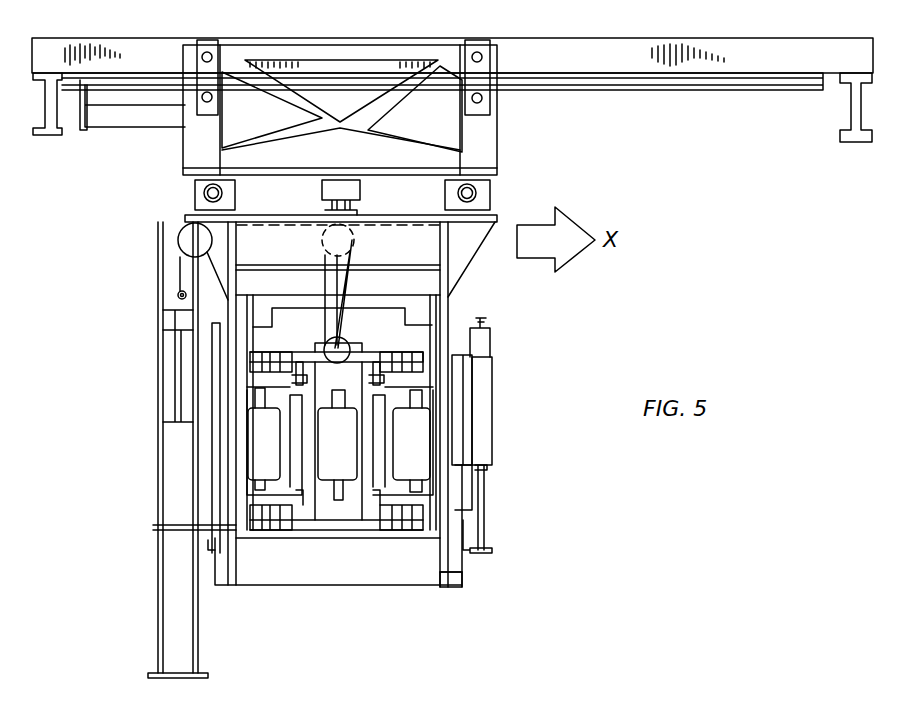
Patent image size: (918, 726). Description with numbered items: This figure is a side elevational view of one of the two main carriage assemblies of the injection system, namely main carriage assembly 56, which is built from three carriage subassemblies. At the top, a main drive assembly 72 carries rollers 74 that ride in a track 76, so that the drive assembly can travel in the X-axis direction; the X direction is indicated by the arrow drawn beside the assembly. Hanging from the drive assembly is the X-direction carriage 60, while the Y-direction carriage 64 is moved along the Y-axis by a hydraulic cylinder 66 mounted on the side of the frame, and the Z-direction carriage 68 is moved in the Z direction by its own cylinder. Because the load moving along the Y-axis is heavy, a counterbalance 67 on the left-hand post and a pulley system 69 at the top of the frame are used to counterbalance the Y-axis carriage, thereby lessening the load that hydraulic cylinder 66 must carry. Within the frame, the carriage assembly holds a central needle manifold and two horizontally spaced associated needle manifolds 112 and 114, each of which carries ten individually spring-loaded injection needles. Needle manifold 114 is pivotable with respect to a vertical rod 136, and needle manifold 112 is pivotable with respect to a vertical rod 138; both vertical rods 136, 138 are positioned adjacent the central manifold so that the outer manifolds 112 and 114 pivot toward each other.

The main carriage assembly 56 is at (498, 457).
The X-direction carriage 60 is at (385, 352).
The Y-direction carriage 64 is at (483, 505).
The hydraulic cylinder 66 is at (480, 423).
The counterbalance 67 is at (185, 373).
The Z-direction carriage 68 is at (462, 568).
The pulley system 69 is at (352, 262).
The main drive assembly 72 is at (482, 152).
The rollers 74 is at (226, 92).
The track 76 is at (538, 53).
The needle manifold 112 is at (410, 433).
The needle manifold 114 is at (265, 452).
The vertical rod 136 is at (312, 347).
The vertical rod 138 is at (363, 350).